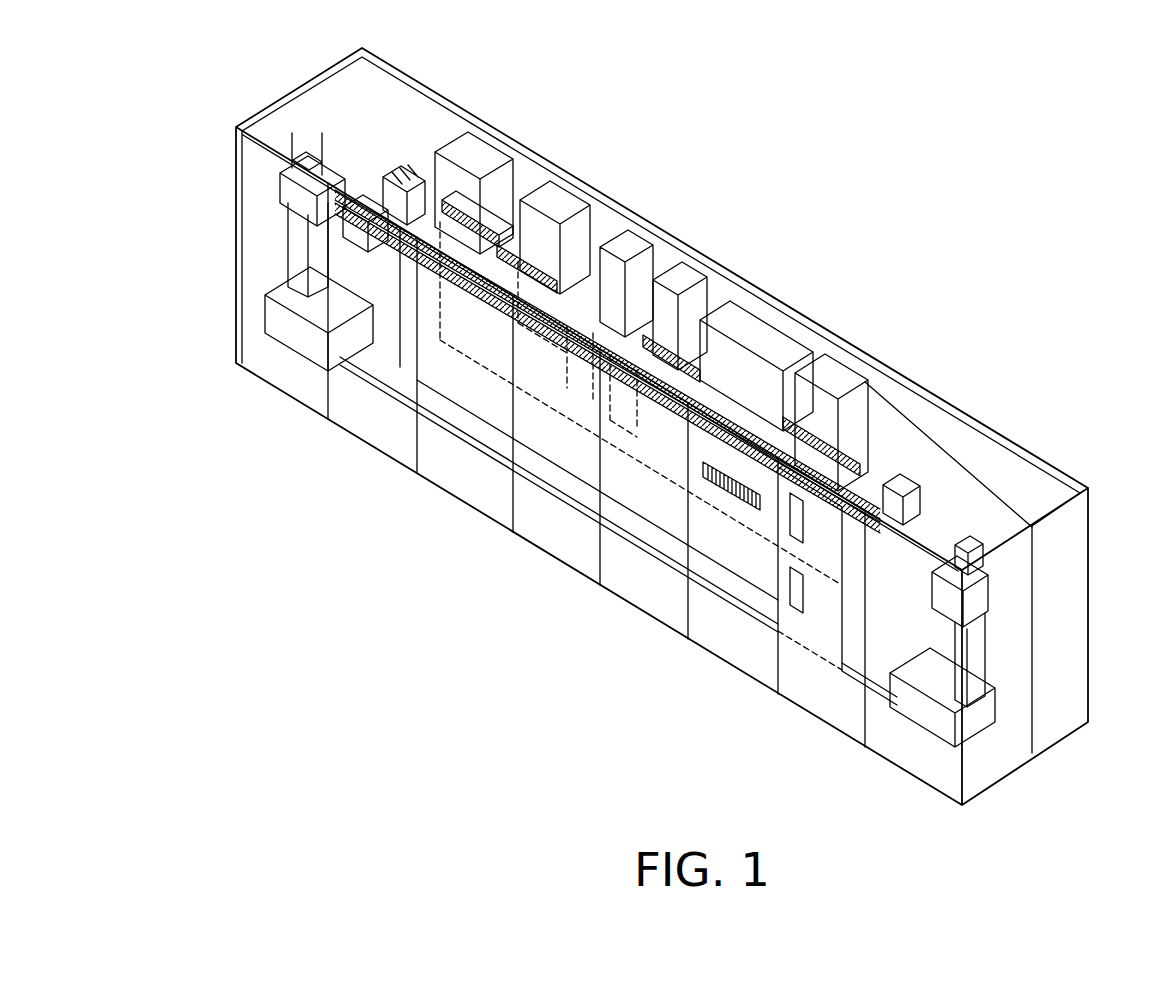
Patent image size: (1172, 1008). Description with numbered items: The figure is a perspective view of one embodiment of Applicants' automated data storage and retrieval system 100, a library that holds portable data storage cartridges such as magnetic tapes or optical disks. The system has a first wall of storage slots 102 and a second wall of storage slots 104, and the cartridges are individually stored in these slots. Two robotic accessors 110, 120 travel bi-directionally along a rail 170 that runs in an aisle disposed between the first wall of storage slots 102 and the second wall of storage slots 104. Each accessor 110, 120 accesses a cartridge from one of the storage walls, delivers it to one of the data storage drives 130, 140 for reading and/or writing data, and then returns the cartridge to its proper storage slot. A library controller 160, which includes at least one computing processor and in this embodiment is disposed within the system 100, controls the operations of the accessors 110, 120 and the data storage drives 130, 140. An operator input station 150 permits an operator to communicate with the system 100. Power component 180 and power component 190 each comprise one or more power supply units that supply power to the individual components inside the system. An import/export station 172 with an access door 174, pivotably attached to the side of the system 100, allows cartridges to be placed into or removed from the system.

The automated data storage and retrieval system 100 is at (590, 668).
The first wall of storage slots 102 is at (508, 232).
The second wall of storage slots 104 is at (447, 383).
The accessor 110 is at (283, 189).
The accessor 120 is at (988, 600).
The data storage drive 130 is at (640, 248).
The data storage drive 140 is at (682, 282).
The operator input station 150 is at (578, 198).
The library controller 160 is at (467, 128).
The rail 170 is at (547, 487).
The import/export station 172 is at (822, 660).
The access door 174 is at (817, 615).
The power component 180 is at (890, 470).
The power component 190 is at (922, 484).